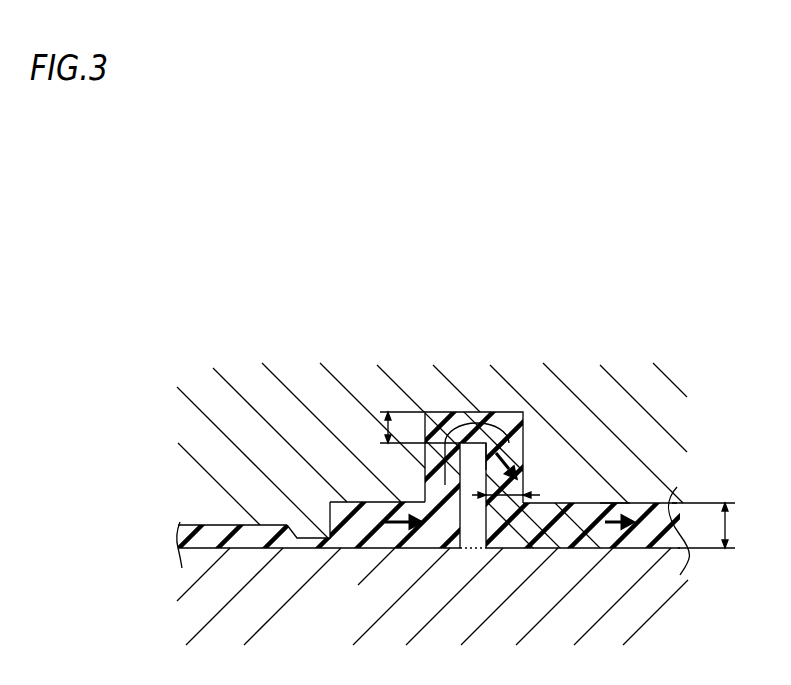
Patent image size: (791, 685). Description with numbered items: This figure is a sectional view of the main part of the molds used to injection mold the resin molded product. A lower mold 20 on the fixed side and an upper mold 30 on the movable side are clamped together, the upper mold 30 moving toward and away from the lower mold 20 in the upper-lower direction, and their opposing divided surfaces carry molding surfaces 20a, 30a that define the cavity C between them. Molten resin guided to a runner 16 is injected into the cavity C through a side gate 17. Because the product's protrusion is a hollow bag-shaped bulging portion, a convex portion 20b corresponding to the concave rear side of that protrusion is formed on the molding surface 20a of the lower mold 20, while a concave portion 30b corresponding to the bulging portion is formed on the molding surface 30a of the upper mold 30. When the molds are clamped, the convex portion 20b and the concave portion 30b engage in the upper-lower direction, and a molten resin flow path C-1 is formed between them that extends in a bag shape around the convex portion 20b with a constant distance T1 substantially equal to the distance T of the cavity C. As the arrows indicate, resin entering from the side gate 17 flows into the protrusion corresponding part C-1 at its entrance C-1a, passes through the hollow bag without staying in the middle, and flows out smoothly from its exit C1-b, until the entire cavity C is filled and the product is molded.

The runner 16 is at (180, 522).
The side gate 17 is at (313, 549).
The lower mold 20 is at (247, 623).
The molding surface 20a is at (660, 550).
The convex portion 20b is at (425, 410).
The upper mold 30 is at (247, 459).
The molding surface 30a is at (673, 495).
The concave portion 30b is at (508, 410).
The cavity C is at (614, 503).
The molten resin flow path C-1 is at (468, 412).
The entrance C-1a is at (450, 550).
The exit C1-b is at (525, 450).
The distance of the cavity T is at (714, 525).
The distance of the molten resin flow path T1 is at (458, 455).